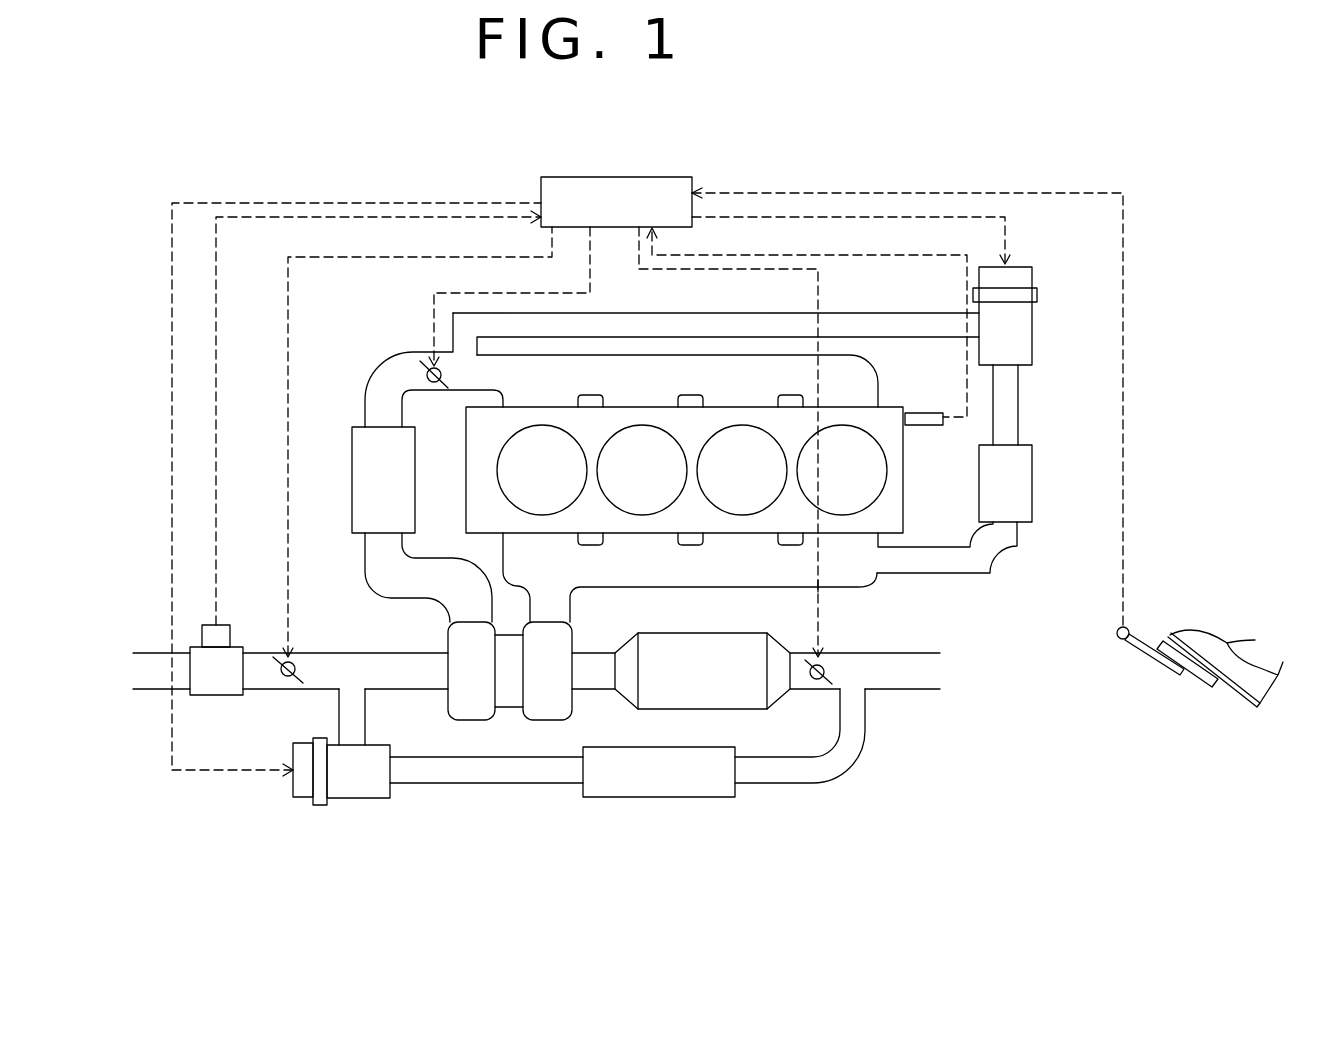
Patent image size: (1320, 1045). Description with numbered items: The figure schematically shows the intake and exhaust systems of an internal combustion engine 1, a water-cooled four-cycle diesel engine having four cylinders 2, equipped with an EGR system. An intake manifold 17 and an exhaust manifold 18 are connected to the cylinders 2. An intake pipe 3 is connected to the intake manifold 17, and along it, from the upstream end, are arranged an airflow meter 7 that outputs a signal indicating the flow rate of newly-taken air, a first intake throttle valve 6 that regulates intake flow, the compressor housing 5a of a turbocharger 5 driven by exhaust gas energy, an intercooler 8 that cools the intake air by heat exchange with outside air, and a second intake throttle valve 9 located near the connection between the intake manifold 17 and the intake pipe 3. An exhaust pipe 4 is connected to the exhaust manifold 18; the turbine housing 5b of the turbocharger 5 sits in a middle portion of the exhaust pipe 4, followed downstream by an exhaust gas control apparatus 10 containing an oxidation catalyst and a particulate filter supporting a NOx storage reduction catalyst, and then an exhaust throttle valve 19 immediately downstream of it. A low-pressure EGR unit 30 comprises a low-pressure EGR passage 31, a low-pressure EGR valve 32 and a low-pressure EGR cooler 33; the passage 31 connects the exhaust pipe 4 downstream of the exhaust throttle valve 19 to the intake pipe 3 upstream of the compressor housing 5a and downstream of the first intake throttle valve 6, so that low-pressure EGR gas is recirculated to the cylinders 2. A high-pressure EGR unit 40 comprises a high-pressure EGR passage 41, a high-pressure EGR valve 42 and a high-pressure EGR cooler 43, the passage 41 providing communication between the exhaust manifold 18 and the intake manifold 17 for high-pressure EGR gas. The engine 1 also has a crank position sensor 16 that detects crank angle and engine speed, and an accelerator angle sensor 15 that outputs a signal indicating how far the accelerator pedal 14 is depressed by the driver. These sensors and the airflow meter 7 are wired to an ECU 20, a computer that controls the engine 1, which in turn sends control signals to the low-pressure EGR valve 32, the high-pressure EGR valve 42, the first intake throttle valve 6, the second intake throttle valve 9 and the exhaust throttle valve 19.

The internal combustion engine 1 is at (625, 452).
The cylinders 2 is at (497, 478).
The intake pipe 3 is at (365, 400).
The exhaust pipe 4 is at (567, 610).
The turbocharger 5 is at (509, 744).
The compressor housing 5a is at (473, 722).
The turbine housing 5b is at (545, 722).
The first intake throttle valve 6 is at (279, 682).
The airflow meter 7 is at (230, 633).
The intercooler 8 is at (352, 470).
The second intake throttle valve 9 is at (434, 382).
The exhaust gas control apparatus 10 is at (722, 710).
The accelerator pedal 14 is at (1202, 686).
The accelerator angle sensor 15 is at (1128, 628).
The crank position sensor 16 is at (928, 426).
The intake manifold 17 is at (878, 380).
The exhaust manifold 18 is at (830, 587).
The exhaust throttle valve 19 is at (815, 684).
The ECU 20 is at (540, 193).
The low-pressure EGR unit 30 is at (524, 777).
The low-pressure EGR passage 31 is at (767, 783).
The low-pressure EGR valve 32 is at (340, 798).
The low-pressure EGR cooler 33 is at (657, 798).
The high-pressure EGR unit 40 is at (991, 424).
The high-pressure EGR passage 41 is at (960, 573).
The high-pressure EGR valve 42 is at (1032, 313).
The high-pressure EGR cooler 43 is at (1032, 510).